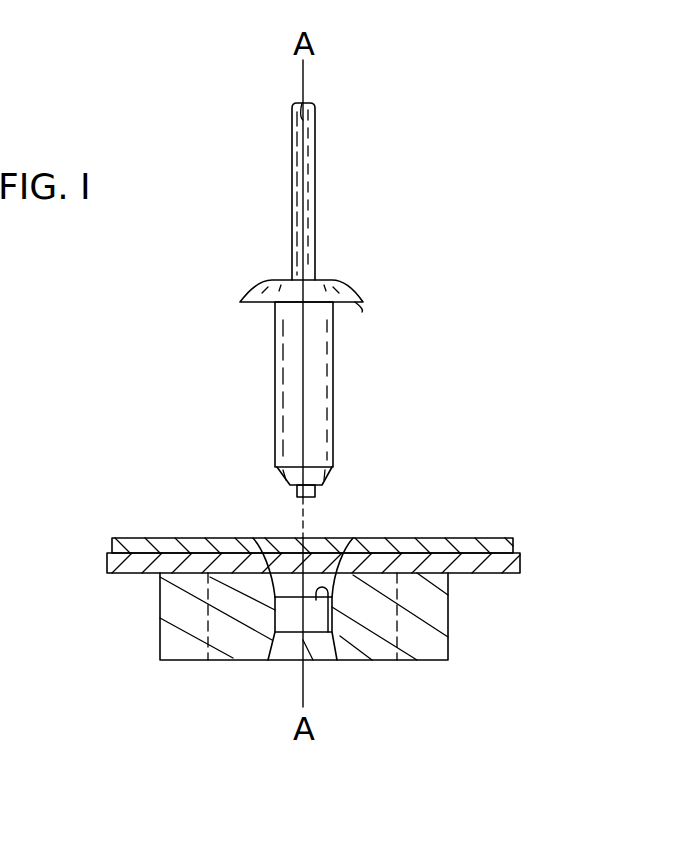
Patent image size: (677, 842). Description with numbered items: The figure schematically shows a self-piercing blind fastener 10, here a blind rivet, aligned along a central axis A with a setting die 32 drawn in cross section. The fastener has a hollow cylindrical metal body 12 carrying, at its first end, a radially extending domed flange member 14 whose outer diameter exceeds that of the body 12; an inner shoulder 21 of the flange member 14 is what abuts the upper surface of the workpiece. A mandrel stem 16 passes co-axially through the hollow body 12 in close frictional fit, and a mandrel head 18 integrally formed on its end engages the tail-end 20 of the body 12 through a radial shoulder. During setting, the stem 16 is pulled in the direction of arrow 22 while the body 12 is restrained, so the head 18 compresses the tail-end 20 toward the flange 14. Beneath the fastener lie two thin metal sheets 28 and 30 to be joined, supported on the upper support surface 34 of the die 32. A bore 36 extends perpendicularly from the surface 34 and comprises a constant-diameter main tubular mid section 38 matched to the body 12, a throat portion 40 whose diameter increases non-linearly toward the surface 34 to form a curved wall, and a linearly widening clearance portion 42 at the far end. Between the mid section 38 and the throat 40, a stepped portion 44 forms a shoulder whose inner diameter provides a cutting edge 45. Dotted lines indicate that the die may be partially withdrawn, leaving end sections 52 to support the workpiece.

The self-piercing blind fastener 10 is at (383, 212).
The cylindrical metal body 12 is at (327, 353).
The domed flange member 14 is at (258, 302).
The mandrel stem 16 is at (308, 125).
The mandrel head 18 is at (333, 470).
The tail-end 20 is at (277, 485).
The inner shoulder 21 is at (350, 304).
The direction arrow 22 is at (232, 137).
The sheet of thin metal 28 is at (483, 538).
The sheet of thin metal 30 is at (522, 573).
The die 32 is at (450, 655).
The upper support surface 34 is at (400, 556).
The bore 36 is at (312, 652).
The main tubular mid section 38 is at (276, 616).
The throat portion 40 is at (332, 580).
The clearance portion 42 is at (287, 664).
The stepped portion 44 is at (252, 540).
The cutting edge 45 is at (330, 602).
The end sections 52 is at (176, 603).